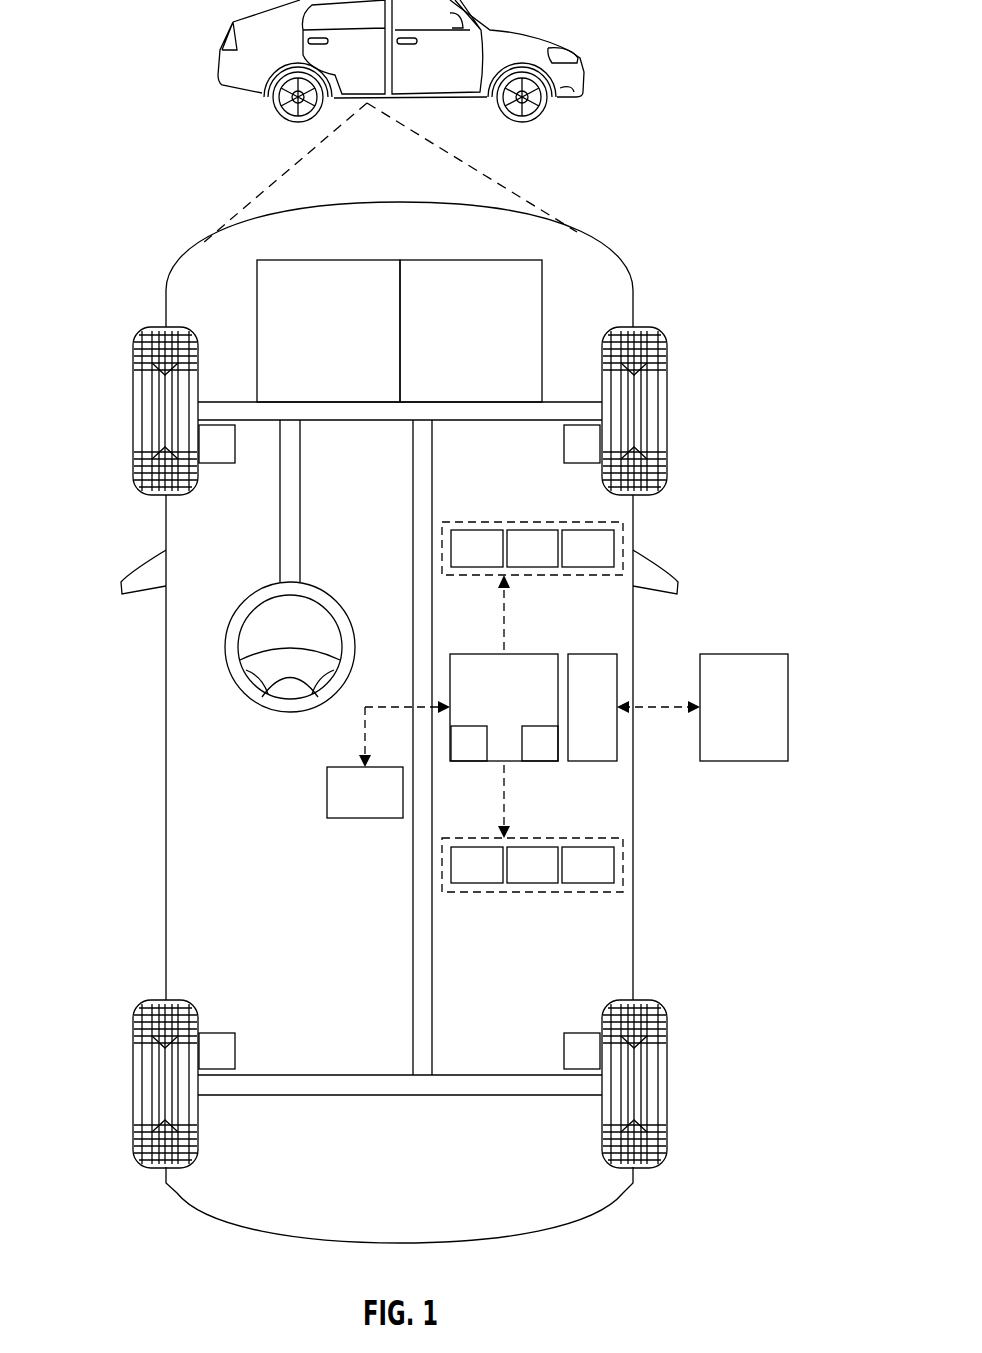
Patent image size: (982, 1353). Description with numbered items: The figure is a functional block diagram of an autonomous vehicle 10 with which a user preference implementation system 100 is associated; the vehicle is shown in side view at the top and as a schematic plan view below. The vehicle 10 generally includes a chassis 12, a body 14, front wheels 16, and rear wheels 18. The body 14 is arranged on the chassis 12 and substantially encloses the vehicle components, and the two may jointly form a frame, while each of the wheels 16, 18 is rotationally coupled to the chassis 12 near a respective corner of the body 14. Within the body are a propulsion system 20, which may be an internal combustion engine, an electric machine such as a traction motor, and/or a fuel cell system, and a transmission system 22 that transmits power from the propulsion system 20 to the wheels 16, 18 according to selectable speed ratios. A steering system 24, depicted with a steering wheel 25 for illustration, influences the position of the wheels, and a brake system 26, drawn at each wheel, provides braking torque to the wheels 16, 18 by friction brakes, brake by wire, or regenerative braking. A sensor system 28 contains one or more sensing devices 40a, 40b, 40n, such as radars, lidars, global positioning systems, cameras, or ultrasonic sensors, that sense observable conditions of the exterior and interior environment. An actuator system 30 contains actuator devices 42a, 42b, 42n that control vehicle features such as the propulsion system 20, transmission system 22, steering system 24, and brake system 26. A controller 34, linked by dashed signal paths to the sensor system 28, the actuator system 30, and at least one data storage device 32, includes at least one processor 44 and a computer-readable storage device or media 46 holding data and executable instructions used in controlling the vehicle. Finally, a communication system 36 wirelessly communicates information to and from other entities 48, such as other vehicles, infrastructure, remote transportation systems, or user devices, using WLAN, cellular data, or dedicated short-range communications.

The user preference implementation system 100 is at (724, 34).
The vehicle 10 is at (228, 45).
The chassis 12 is at (505, 1095).
The body 14 is at (166, 805).
The front wheels 16 is at (132, 412).
The rear wheels 18 is at (132, 1085).
The propulsion system 20 is at (342, 345).
The transmission system 22 is at (485, 345).
The steering system 24 is at (318, 455).
The steering wheel 25 is at (290, 712).
The brake system 26 is at (230, 460).
The sensor system 28 is at (489, 521).
The actuator system 30 is at (487, 893).
The data storage device 32 is at (379, 807).
The controller 34 is at (518, 720).
The communication system 36 is at (606, 720).
The sensing device 40a is at (498, 564).
The sensing device 40b is at (554, 564).
The sensing device 40n is at (609, 564).
The actuator device 42a is at (498, 880).
The actuator device 42b is at (554, 880).
The actuator device 42n is at (609, 880).
The processor 44 is at (482, 758).
The computer-readable storage device or media 46 is at (553, 758).
The other entities 48 is at (758, 720).